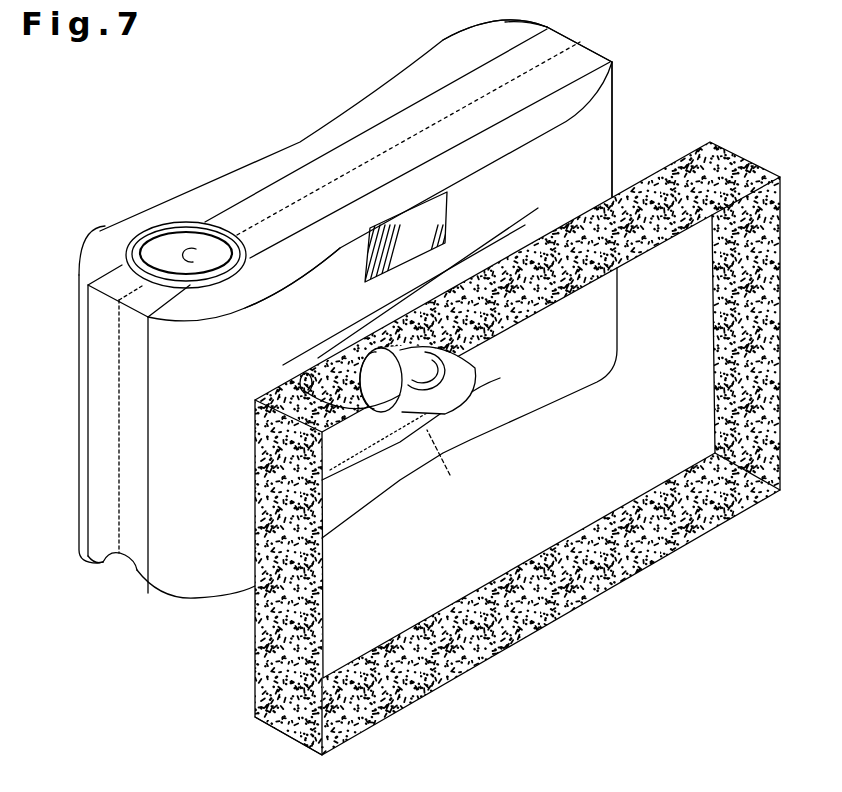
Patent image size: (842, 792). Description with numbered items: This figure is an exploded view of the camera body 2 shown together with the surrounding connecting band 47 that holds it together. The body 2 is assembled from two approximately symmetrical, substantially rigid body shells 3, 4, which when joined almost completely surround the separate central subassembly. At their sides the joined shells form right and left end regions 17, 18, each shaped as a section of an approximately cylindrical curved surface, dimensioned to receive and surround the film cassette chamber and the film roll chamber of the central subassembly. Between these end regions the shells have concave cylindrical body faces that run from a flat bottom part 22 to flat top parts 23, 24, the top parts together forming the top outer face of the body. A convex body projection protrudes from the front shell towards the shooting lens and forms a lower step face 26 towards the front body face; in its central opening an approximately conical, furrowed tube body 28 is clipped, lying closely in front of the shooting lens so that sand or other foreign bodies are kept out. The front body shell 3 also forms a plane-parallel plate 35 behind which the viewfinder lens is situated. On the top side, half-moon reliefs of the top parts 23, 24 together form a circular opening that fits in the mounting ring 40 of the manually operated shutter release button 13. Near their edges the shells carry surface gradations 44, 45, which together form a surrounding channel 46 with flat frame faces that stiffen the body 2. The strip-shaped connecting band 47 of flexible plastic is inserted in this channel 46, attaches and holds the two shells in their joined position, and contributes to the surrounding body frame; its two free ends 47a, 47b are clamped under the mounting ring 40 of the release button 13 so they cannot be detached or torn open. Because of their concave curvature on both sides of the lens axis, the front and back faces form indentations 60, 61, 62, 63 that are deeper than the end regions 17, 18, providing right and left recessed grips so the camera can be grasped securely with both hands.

The outer body 2 is at (178, 165).
The front body shell 3 is at (206, 563).
The back body shell 4 is at (362, 122).
The shutter release button 13 is at (160, 250).
The right body end region 17 is at (173, 462).
The left body end region 18 is at (602, 150).
The flat bottom part 22 is at (460, 252).
The flat top part 23 is at (590, 80).
The flat top part 24 is at (505, 28).
The lower step face 26 is at (448, 467).
The tube body 28 is at (457, 363).
The plane-parallel plate 35 is at (365, 278).
The mounting ring 40 is at (133, 247).
The surface gradation 44 is at (147, 403).
The surface gradation 45 is at (82, 355).
The surrounding channel 46 is at (105, 492).
The connecting band 47 is at (258, 697).
The free end of connecting band 47a is at (303, 382).
The free end of connecting band 47b is at (390, 400).
The indentation 60 is at (300, 280).
The indentation 61 is at (507, 147).
The indentation 62 is at (240, 172).
The indentation 63 is at (440, 44).